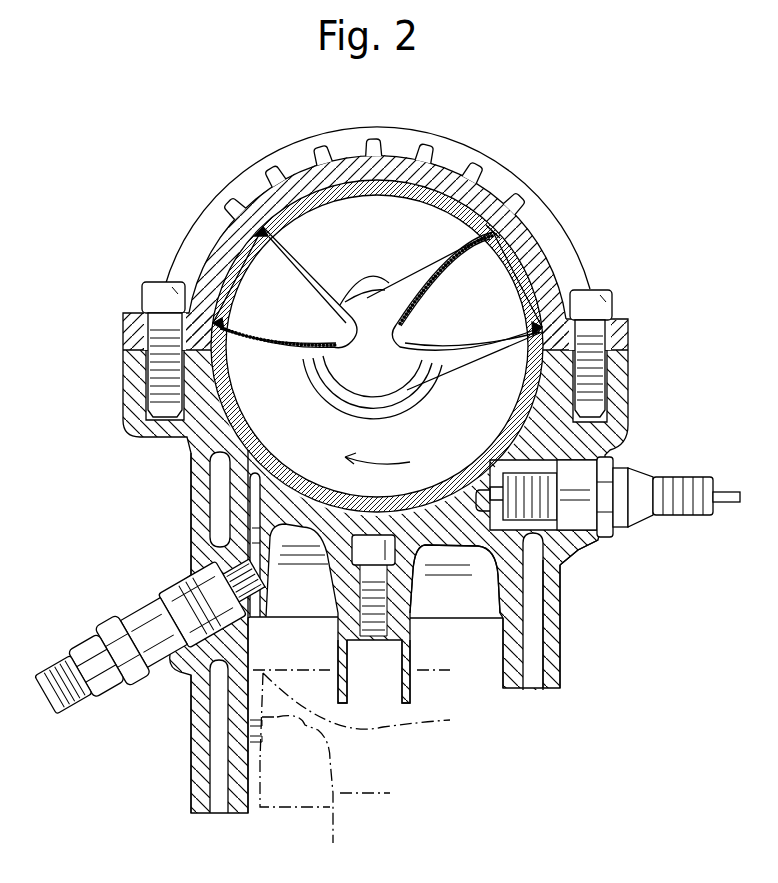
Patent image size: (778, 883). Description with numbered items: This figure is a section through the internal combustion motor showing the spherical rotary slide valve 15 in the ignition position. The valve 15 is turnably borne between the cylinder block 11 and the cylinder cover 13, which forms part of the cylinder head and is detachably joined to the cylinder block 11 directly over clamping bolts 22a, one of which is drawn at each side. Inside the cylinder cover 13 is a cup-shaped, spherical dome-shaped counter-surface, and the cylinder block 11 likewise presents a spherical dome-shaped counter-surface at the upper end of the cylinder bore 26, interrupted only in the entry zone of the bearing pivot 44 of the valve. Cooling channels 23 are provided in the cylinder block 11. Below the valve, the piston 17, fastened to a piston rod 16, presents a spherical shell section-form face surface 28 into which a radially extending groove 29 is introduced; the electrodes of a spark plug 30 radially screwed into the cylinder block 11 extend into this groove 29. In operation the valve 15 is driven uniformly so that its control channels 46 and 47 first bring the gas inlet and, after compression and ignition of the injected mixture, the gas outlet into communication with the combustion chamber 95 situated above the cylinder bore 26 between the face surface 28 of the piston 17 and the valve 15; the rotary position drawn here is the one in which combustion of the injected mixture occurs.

The cylinder block 11 is at (200, 775).
The cylinder cover 13 is at (510, 193).
The spherical rotary slide valve 15 is at (396, 182).
The piston rod 16 is at (410, 695).
The piston 17 is at (523, 603).
The clamping bolts 22a is at (610, 290).
The cooling channels 23 is at (530, 647).
The cylinder bore 26 is at (498, 657).
The face surface 28 is at (307, 513).
The groove 29 is at (560, 573).
The spark plug 30 is at (607, 533).
The bearing pivot 44 is at (365, 283).
The control channel 46 is at (503, 287).
The control channel 47 is at (260, 288).
The combustion chamber 95 is at (368, 530).